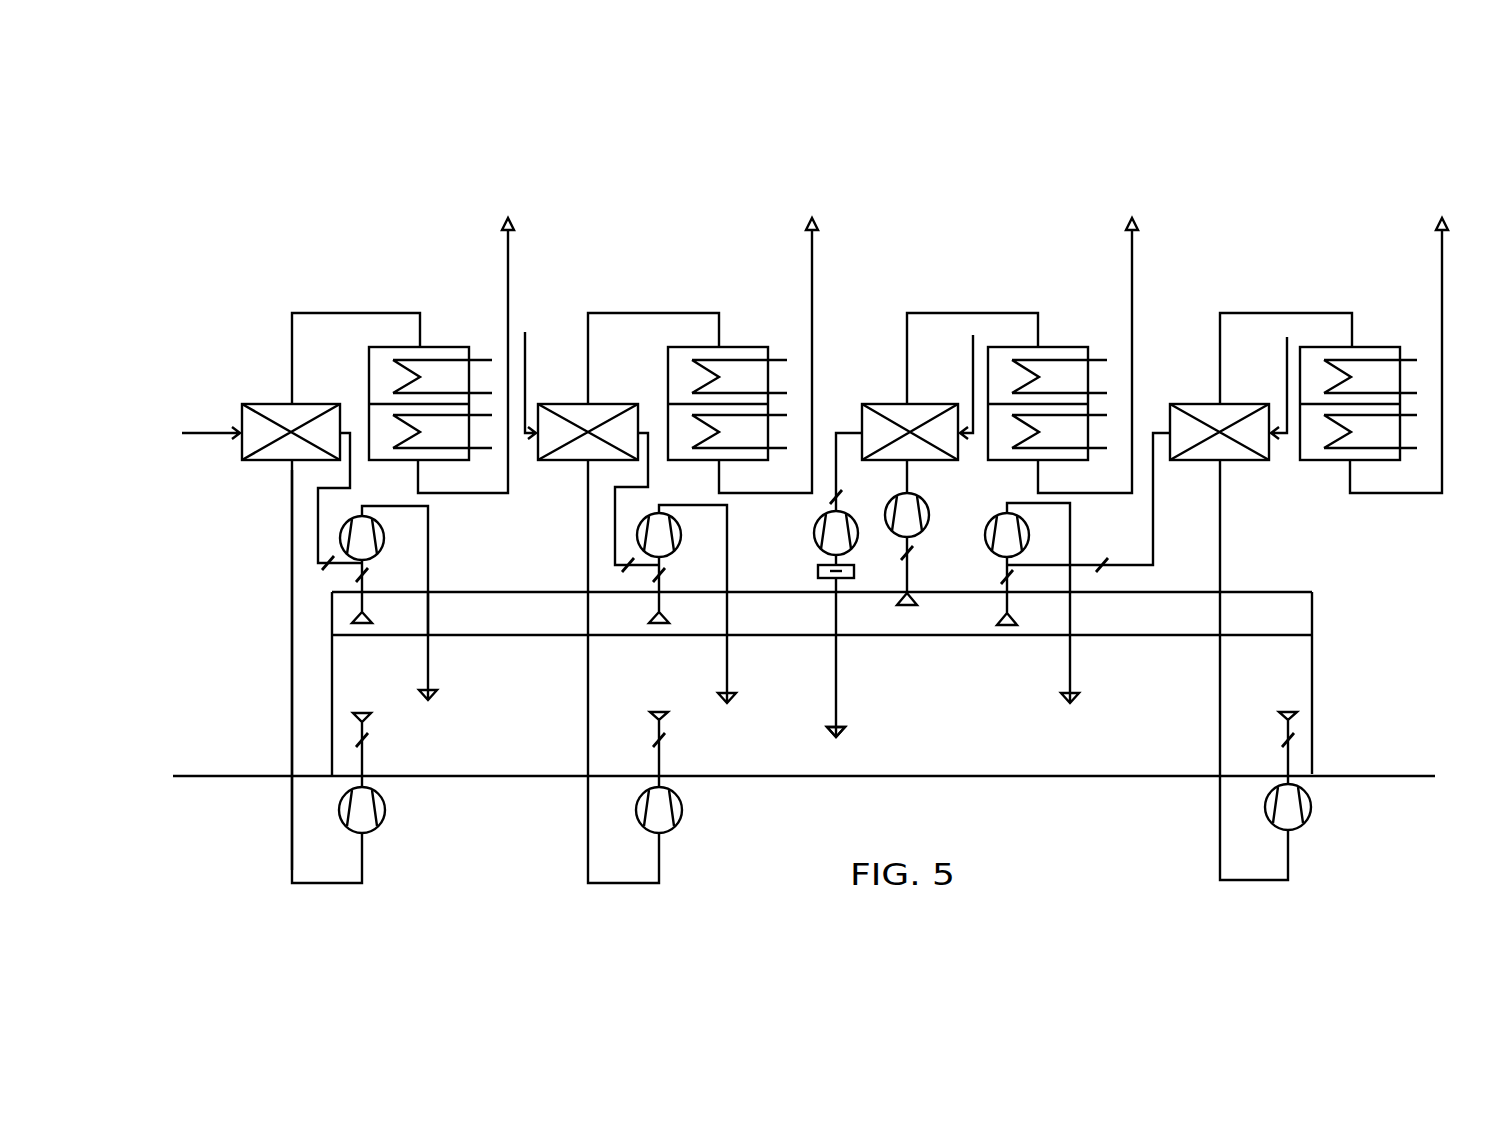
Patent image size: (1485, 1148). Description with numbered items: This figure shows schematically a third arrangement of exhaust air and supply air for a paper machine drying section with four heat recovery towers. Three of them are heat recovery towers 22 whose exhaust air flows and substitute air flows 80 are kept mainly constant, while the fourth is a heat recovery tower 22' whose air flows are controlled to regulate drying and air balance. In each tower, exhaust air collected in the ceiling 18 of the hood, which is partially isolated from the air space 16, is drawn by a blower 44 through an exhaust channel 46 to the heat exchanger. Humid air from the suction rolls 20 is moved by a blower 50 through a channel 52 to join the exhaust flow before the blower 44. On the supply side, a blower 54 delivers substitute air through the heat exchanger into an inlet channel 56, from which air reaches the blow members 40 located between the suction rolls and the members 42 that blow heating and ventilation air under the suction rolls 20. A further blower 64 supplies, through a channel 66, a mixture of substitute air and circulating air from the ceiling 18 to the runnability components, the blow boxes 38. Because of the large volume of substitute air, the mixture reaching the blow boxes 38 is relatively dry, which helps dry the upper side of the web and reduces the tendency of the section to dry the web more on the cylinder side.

The air space 16 is at (982, 706).
The ceiling 18 is at (1268, 612).
The suction rolls 20 is at (367, 712).
The heat recovery tower 22 is at (815, 516).
The heat recovery tower 22' is at (1000, 319).
The blow boxes 38 is at (437, 693).
The blow members 40 is at (845, 730).
The members 42 is at (845, 730).
The blower 44 is at (910, 527).
The exhaust channel 46 is at (908, 570).
The blower 50 is at (367, 813).
The channel 52 is at (288, 647).
The blower 54 is at (828, 523).
The inlet channel 56 is at (837, 670).
The blower 64 is at (367, 542).
The channel 66 is at (428, 622).
The substitute air flows 80 is at (317, 507).